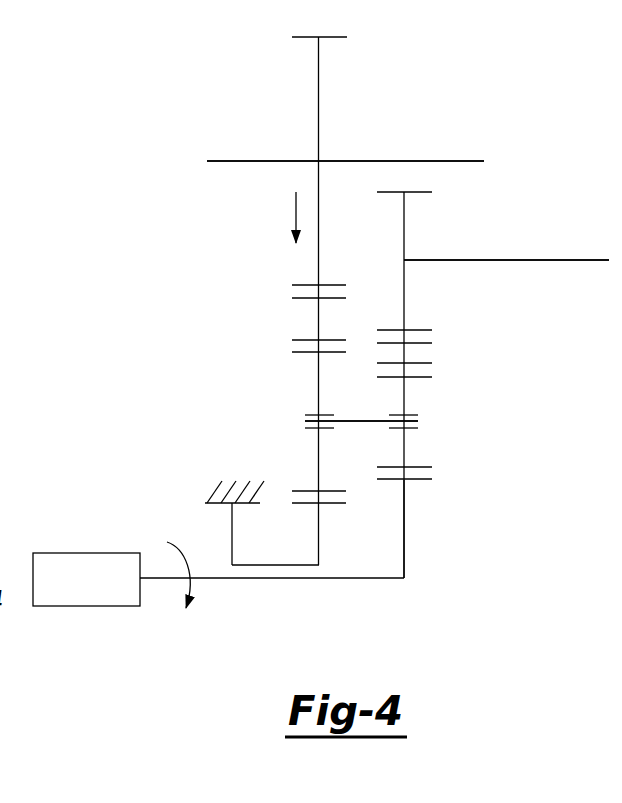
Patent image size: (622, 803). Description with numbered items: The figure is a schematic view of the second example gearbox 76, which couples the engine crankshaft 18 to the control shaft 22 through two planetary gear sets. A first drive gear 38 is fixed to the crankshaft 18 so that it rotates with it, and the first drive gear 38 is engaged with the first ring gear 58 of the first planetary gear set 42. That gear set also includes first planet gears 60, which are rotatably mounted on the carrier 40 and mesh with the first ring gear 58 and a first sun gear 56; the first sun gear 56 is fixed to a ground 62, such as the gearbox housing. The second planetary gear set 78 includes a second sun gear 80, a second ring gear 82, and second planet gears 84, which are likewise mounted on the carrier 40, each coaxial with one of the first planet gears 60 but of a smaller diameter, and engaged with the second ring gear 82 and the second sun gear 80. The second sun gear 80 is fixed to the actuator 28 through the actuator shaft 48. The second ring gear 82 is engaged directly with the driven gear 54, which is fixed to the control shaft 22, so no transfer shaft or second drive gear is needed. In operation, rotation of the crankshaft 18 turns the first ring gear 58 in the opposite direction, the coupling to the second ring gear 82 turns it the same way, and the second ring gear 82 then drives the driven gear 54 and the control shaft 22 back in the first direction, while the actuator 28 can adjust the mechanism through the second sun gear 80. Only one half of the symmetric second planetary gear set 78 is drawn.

The first drive gear 38 is at (318, 88).
The crankshaft 18 is at (463, 161).
The driven gear 54 is at (404, 227).
The control shaft 22 is at (592, 260).
The first planetary gear set 42 is at (283, 278).
The first ring gear 58 is at (318, 330).
The first planet gears 60 is at (318, 385).
The carrier 40 is at (352, 421).
The second planetary gear set 78 is at (437, 326).
The second ring gear 82 is at (403, 350).
The second planet gears 84 is at (404, 448).
The first sun gear 56 is at (319, 523).
The second sun gear 80 is at (404, 529).
The actuator shaft 48 is at (360, 578).
The ground 62 is at (212, 505).
The actuator 28 is at (88, 553).
The gearbox 76 is at (190, 222).